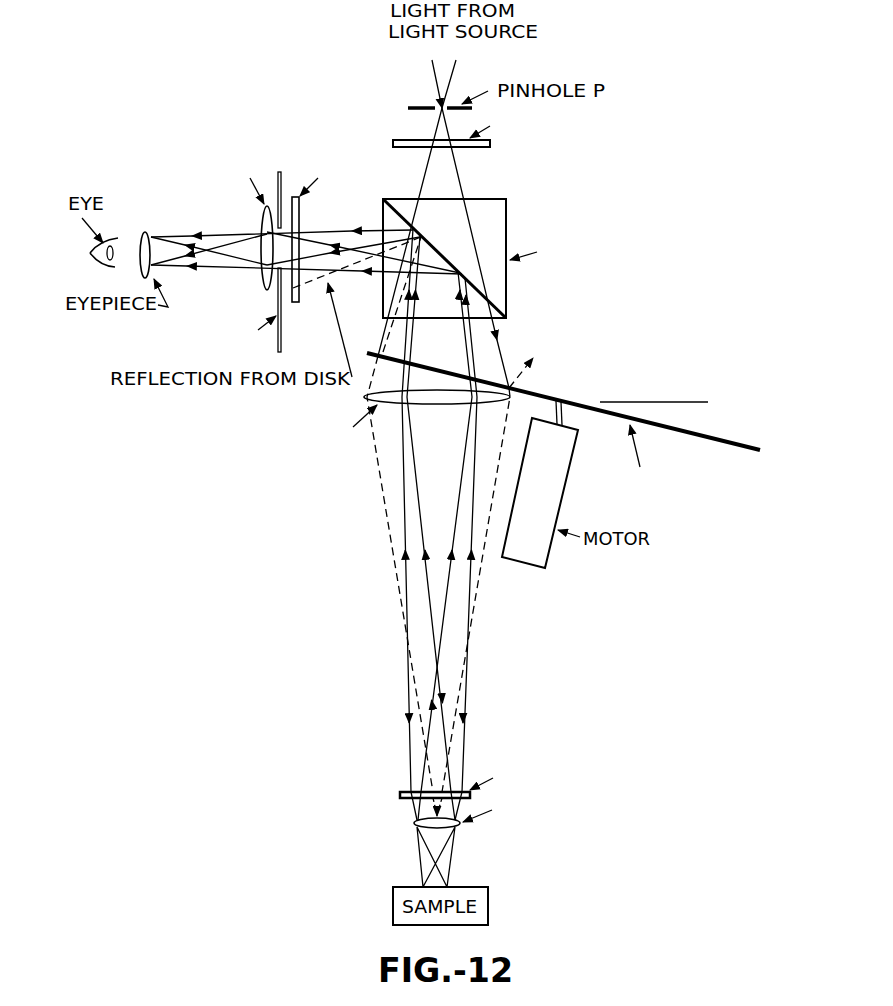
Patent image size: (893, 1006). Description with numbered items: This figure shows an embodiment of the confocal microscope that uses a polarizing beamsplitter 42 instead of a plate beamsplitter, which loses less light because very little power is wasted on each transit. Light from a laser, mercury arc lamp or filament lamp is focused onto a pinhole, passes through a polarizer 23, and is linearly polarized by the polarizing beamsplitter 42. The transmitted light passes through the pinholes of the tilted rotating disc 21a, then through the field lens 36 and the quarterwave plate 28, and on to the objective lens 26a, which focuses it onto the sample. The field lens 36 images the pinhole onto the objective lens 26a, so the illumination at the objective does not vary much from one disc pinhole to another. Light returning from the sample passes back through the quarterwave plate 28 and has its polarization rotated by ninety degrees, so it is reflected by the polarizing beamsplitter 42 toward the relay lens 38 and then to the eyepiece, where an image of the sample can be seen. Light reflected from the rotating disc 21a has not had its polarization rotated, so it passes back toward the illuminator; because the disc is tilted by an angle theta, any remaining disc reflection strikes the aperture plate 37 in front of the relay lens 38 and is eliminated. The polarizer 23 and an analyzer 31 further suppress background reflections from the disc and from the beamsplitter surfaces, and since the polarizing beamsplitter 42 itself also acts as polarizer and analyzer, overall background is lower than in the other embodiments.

The polarizer 23 is at (487, 148).
The polarizing beamsplitter 42 is at (507, 216).
The analyzer 31 is at (300, 212).
The relay lens 38 is at (265, 284).
The aperture plate 37 is at (281, 335).
The field lens 36 is at (392, 404).
The rotating disc 21a is at (537, 393).
The quarterwave plate 28 is at (400, 793).
The objective lens 26a is at (413, 823).